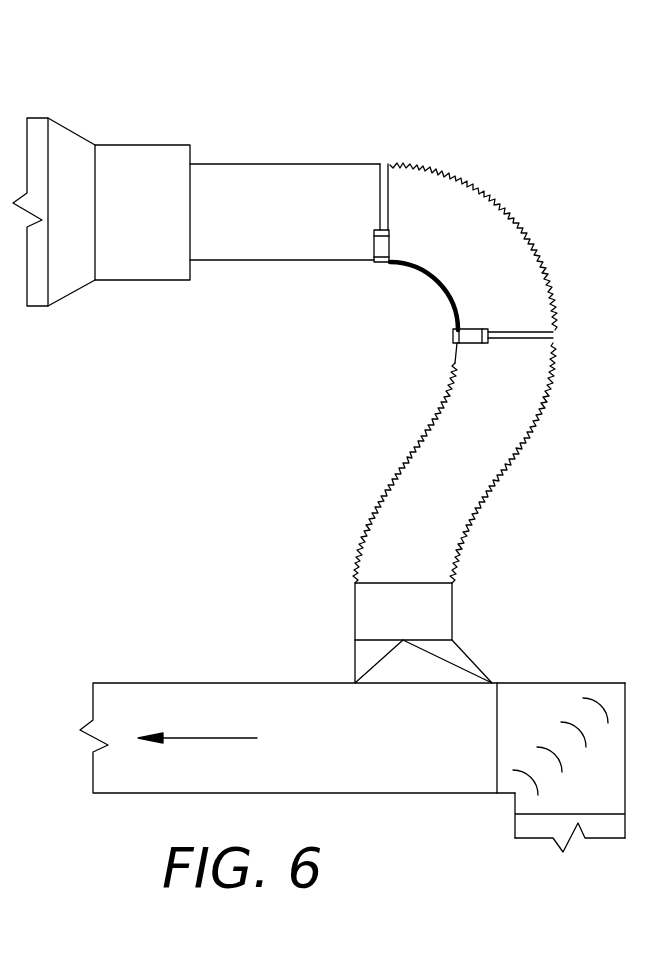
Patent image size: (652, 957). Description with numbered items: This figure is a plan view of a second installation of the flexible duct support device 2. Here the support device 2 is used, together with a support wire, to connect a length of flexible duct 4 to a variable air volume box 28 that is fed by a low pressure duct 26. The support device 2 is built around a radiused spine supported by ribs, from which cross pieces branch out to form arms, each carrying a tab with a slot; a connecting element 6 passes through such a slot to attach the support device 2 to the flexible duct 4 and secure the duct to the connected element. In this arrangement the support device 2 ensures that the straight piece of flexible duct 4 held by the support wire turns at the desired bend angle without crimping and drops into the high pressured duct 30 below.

The structural support device 2 is at (432, 287).
The flexible duct 4 is at (474, 467).
The connecting element 6 is at (533, 332).
The low pressure duct 26 is at (27, 118).
The variable air volume box 28 is at (153, 236).
The high pressured duct 30 is at (93, 683).